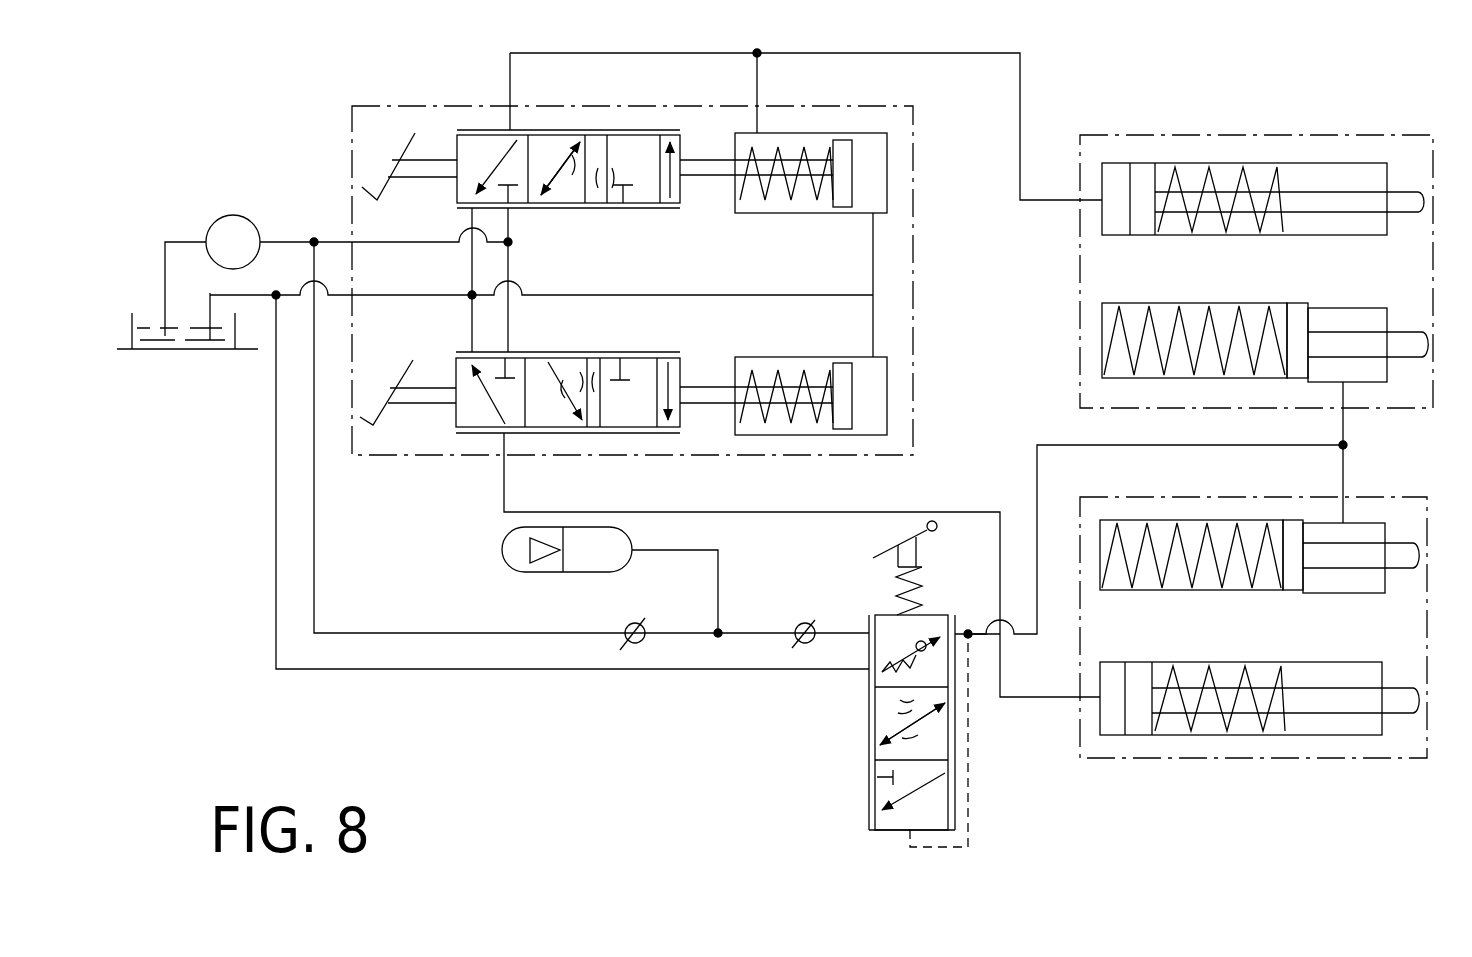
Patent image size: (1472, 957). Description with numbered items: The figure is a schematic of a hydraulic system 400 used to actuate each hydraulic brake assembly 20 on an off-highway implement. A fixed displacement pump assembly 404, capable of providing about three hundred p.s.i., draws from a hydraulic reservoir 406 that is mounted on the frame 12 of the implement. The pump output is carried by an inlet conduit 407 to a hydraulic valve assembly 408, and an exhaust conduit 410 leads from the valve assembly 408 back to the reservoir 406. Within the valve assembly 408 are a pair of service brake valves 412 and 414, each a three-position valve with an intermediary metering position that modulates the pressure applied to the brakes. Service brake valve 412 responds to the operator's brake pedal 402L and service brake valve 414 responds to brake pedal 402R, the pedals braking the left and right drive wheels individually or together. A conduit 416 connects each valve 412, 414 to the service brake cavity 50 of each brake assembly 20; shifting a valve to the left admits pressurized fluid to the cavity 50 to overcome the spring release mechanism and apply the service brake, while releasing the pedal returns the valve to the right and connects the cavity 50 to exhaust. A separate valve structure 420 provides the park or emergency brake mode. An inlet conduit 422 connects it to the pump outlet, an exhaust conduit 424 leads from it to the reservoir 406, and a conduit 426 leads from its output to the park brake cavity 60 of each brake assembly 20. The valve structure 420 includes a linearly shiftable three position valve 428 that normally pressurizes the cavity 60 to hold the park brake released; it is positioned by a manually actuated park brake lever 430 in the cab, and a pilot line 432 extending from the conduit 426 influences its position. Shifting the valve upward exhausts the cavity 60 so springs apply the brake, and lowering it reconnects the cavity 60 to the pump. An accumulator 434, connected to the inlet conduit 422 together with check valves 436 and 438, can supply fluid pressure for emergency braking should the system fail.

The frame 12 is at (253, 342).
The hydraulic brake assembly 20 is at (1138, 133).
The cavity 50 is at (1117, 222).
The park brake cavity 60 is at (1330, 320).
The hydraulic system 400 is at (684, 735).
The brake pedal 402L is at (393, 163).
The brake pedal 402R is at (385, 393).
The pump assembly 404 is at (292, 190).
The hydraulic reservoir 406 is at (132, 313).
The inlet conduit 407 is at (373, 246).
The hydraulic valve assembly 408 is at (920, 252).
The exhaust conduit 410 is at (542, 295).
The service brake valve 412 is at (620, 218).
The service brake valve 414 is at (598, 344).
The conduit 416 is at (945, 55).
The valve structure 420 is at (862, 767).
The inlet conduit 422 is at (314, 530).
The exhaust conduit 424 is at (313, 668).
The conduit 426 is at (1080, 444).
The three position valve 428 is at (885, 832).
The park brake lever 430 is at (897, 548).
The pilot line 432 is at (968, 846).
The accumulator 434 is at (537, 575).
The check valve 436 is at (628, 619).
The check valve 438 is at (795, 625).